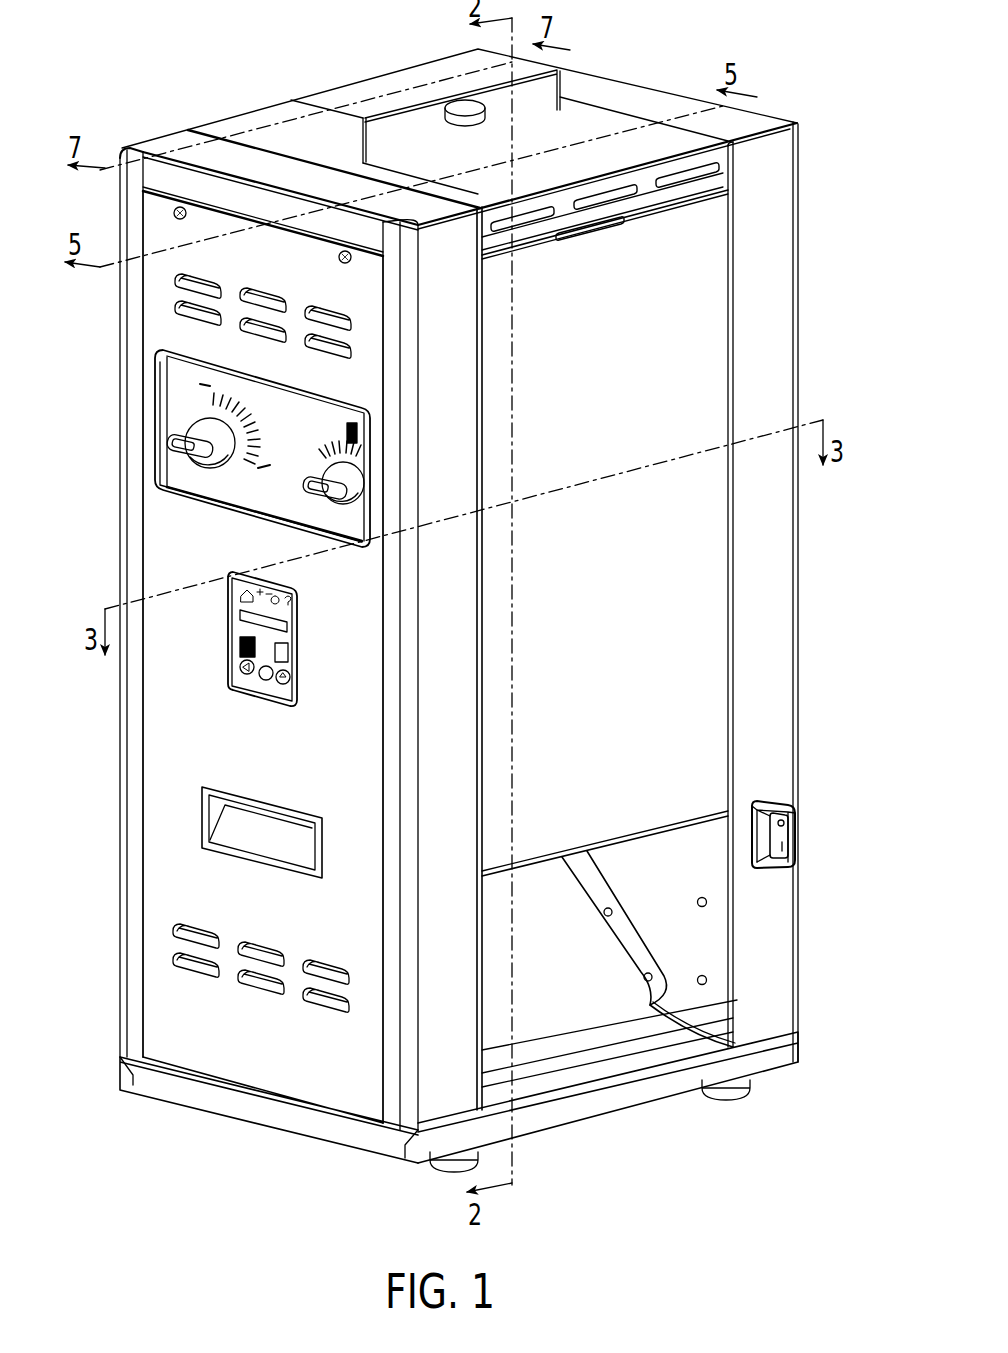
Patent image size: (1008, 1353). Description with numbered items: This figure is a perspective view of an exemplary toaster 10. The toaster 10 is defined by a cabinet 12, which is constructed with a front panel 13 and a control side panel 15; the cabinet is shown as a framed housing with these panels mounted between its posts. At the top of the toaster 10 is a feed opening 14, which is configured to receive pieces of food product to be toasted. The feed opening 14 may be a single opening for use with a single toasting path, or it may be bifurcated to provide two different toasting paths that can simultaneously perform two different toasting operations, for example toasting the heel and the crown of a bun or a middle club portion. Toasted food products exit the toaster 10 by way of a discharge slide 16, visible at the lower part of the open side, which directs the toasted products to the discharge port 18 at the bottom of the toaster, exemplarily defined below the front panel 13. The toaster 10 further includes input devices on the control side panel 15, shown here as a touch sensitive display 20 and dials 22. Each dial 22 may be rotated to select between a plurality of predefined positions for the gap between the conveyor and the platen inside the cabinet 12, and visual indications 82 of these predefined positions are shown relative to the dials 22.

The toaster 10 is at (778, 60).
The cabinet 12 is at (780, 504).
The front panel 13 is at (703, 352).
The feed opening 14 is at (553, 80).
The control side panel 15 is at (168, 710).
The discharge slide 16 is at (555, 908).
The discharge port 18 is at (697, 1027).
The touch sensitive display 20 is at (297, 648).
The dials 22 is at (343, 482).
The visual indications 82 is at (262, 398).